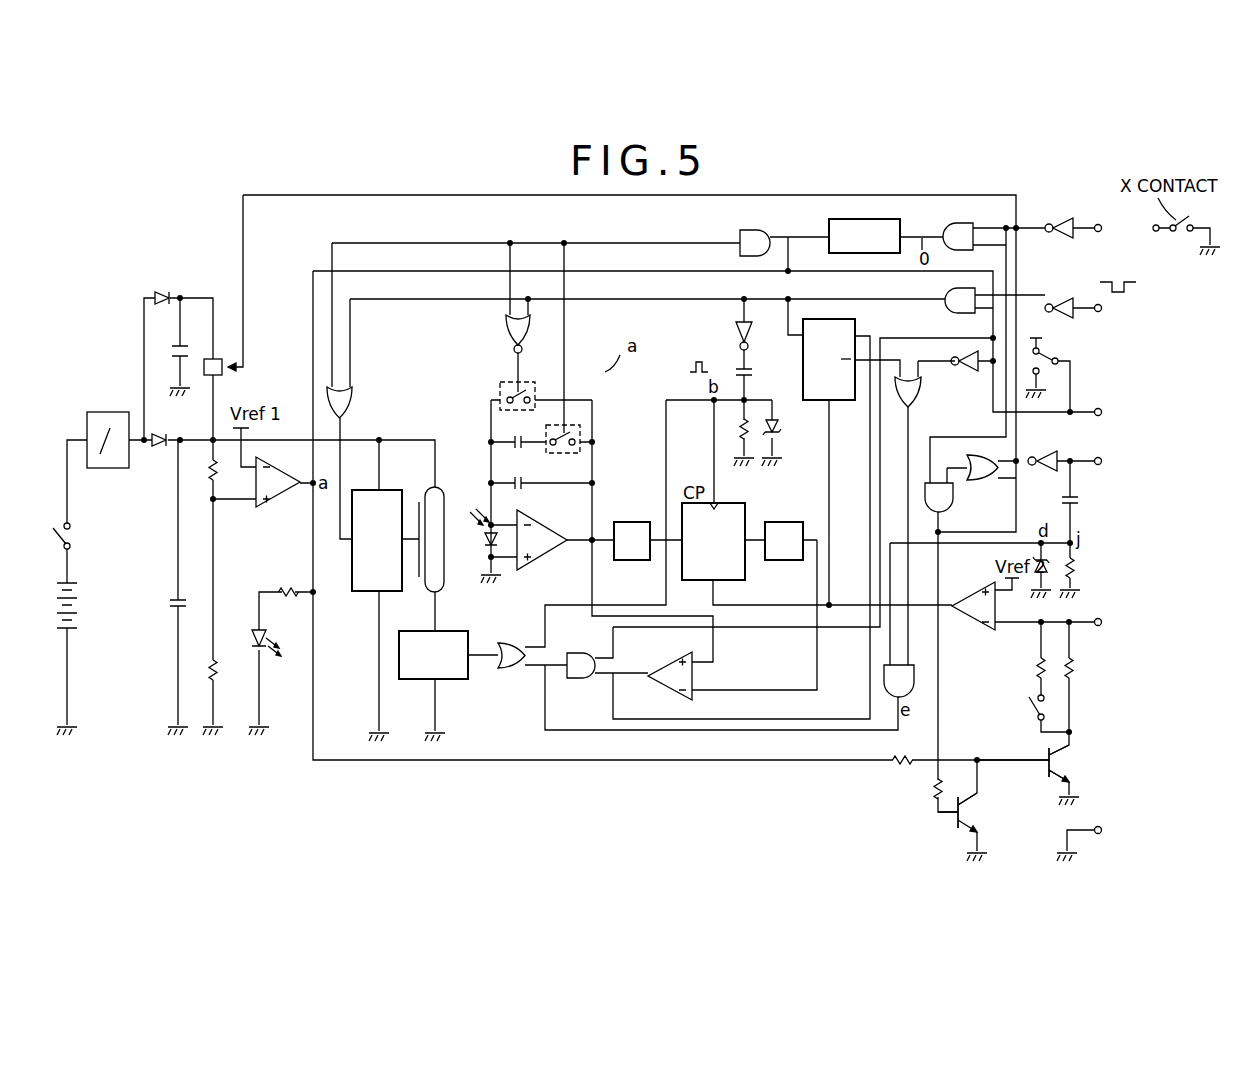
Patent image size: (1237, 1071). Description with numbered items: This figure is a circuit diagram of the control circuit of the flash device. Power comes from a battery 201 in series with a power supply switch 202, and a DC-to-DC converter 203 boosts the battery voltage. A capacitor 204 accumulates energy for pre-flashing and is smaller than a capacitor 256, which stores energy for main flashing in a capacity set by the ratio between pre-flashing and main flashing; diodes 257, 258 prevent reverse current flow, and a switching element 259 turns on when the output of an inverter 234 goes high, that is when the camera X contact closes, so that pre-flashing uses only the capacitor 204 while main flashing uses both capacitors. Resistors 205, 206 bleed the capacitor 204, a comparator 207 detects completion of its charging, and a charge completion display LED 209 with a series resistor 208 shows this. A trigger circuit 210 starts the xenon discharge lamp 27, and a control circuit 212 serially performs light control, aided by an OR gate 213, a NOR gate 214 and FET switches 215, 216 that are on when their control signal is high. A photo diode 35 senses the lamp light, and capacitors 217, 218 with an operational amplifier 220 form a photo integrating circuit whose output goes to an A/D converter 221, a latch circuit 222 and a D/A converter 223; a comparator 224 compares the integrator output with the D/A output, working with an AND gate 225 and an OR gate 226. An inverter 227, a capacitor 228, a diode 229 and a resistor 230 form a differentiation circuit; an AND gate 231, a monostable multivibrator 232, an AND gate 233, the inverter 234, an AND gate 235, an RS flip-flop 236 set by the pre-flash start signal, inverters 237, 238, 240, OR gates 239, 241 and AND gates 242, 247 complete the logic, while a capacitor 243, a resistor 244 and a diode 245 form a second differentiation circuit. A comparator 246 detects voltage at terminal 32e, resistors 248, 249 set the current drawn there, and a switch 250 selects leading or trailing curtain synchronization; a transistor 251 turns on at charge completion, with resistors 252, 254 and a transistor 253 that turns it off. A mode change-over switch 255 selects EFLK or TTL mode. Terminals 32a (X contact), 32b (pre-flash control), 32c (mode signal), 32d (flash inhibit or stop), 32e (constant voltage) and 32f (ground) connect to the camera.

The battery 201 is at (78, 600).
The power supply switch 202 is at (72, 535).
The DC-to-DC converter 203 is at (122, 411).
The capacitor 204 is at (176, 598).
The resistor 205 is at (208, 472).
The resistor 206 is at (216, 668).
The comparator 207 is at (278, 500).
The resistor 208 is at (283, 585).
The charge completion display LED 209 is at (255, 628).
The trigger circuit 210 is at (364, 592).
The xenon discharge lamp 27 is at (440, 486).
The control circuit 212 is at (456, 680).
The OR gate 213 is at (355, 400).
The NOR gate 214 is at (505, 326).
The switch 215 is at (500, 398).
The switch 216 is at (563, 422).
The capacitor 217 is at (522, 448).
The capacitor 218 is at (524, 489).
The photo diode 35 is at (485, 550).
The operational amplifier 220 is at (552, 558).
The A/D converter 221 is at (640, 521).
The latch circuit 222 is at (748, 511).
The D/A converter 223 is at (798, 521).
The comparator 224 is at (668, 662).
The AND gate 225 is at (579, 652).
The OR gate 226 is at (515, 670).
The inverter 227 is at (736, 333).
The capacitor 228 is at (752, 372).
The diode 229 is at (782, 427).
The resistor 230 is at (741, 437).
The AND gate 231 is at (740, 233).
The monostable multivibrator 232 is at (828, 231).
The AND gate 233 is at (946, 225).
The inverter 234 is at (1059, 218).
The AND gate 235 is at (943, 311).
The RS flip-flop 236 is at (860, 327).
The inverter 237 is at (1059, 298).
The inverter 238 is at (968, 372).
The OR gate 239 is at (920, 400).
The inverter 240 is at (1041, 472).
The OR gate 241 is at (985, 480).
The AND gate 242 is at (955, 505).
The capacitor 243 is at (1075, 506).
The resistor 244 is at (1077, 568).
The diode 245 is at (1036, 584).
The comparator 246 is at (966, 590).
The AND gate 247 is at (912, 668).
The resistor 248 is at (1035, 668).
The resistor 249 is at (1076, 672).
The switch 250 is at (1031, 709).
The transistor 251 is at (1062, 761).
The resistor 252 is at (904, 753).
The transistor 253 is at (976, 811).
The resistor 254 is at (931, 791).
The mode change-over switch 255 is at (1056, 350).
The capacitor 256 is at (177, 348).
The diode 257 is at (158, 432).
The diode 258 is at (162, 292).
The switching element 259 is at (210, 358).
The terminal 32a is at (1144, 227).
The terminal 32b is at (1139, 309).
The terminal 32c is at (1166, 422).
The terminal 32d is at (1166, 462).
The terminal 32e is at (1160, 623).
The terminal 32f is at (1143, 831).